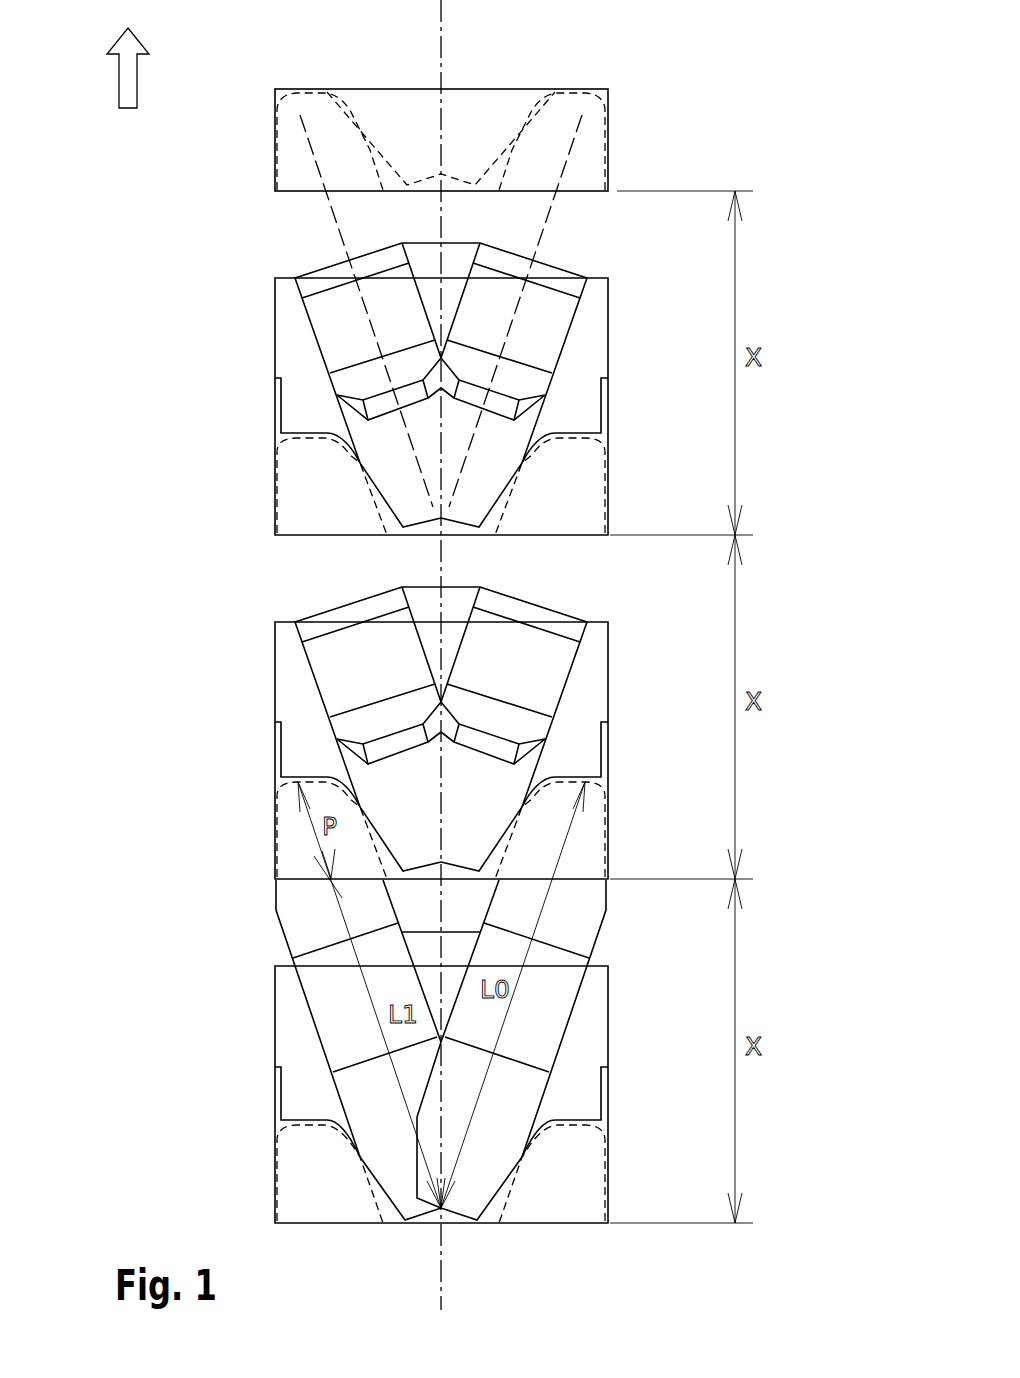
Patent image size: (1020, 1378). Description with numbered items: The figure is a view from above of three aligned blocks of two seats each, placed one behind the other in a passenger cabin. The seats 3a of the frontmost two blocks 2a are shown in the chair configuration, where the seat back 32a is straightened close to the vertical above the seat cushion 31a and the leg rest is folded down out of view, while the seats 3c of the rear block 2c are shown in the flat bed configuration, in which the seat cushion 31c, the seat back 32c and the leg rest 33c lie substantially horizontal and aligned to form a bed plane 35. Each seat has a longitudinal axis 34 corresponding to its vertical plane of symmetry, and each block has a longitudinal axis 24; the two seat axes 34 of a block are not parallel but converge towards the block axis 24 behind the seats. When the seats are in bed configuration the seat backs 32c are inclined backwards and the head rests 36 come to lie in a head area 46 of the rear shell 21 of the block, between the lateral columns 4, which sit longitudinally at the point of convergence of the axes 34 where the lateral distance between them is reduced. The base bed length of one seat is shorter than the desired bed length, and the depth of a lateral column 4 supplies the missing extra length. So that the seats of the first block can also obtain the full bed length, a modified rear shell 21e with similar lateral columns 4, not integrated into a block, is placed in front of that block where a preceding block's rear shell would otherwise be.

The longitudinal axis of block 24 is at (441, 33).
The modified rear shell 21e is at (608, 95).
The rear shell 21 is at (429, 750).
The front block 2a is at (246, 525).
The rear block 2c is at (253, 1192).
The lateral column 4 is at (296, 131).
The longitudinal axis of seat 34 is at (338, 231).
The seat in chair configuration 3a is at (444, 557).
The seat cushion 31a is at (545, 312).
The seat back 32a is at (535, 382).
The head area 46 is at (420, 818).
The seat in bed configuration 3c is at (433, 1085).
The leg rest 33c is at (567, 915).
The bed plane 35 is at (341, 989).
The seat cushion 31c is at (543, 1002).
The seat back 32c is at (507, 1100).
The head rest 36 is at (477, 1188).